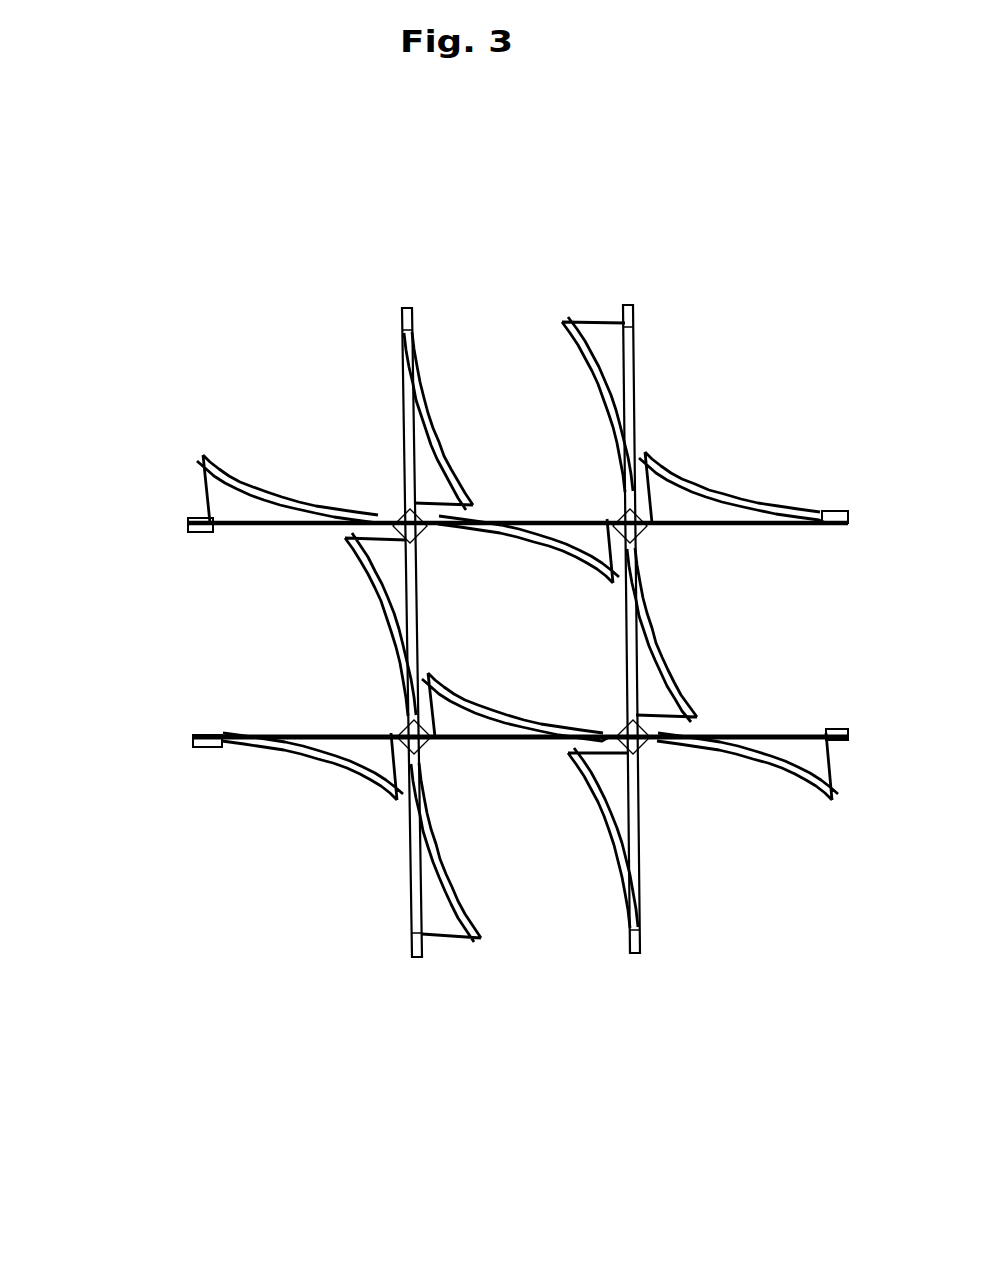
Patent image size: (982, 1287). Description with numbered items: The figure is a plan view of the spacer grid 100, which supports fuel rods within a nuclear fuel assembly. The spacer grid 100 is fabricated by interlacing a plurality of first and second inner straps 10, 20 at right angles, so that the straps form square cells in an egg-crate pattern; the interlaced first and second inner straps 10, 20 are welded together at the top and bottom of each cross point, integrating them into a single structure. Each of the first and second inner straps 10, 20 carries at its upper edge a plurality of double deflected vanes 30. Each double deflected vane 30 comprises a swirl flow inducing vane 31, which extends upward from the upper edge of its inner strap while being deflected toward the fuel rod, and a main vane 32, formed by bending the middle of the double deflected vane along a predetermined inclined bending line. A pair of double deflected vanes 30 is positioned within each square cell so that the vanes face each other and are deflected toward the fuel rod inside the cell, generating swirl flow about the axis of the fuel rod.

The spacer grid 100 is at (196, 262).
The first inner straps 10 is at (197, 528).
The second inner straps 20 is at (633, 950).
The double deflected vanes 30 is at (522, 543).
The swirl flow inducing vane 31 is at (627, 437).
The main vane 32 is at (240, 487).